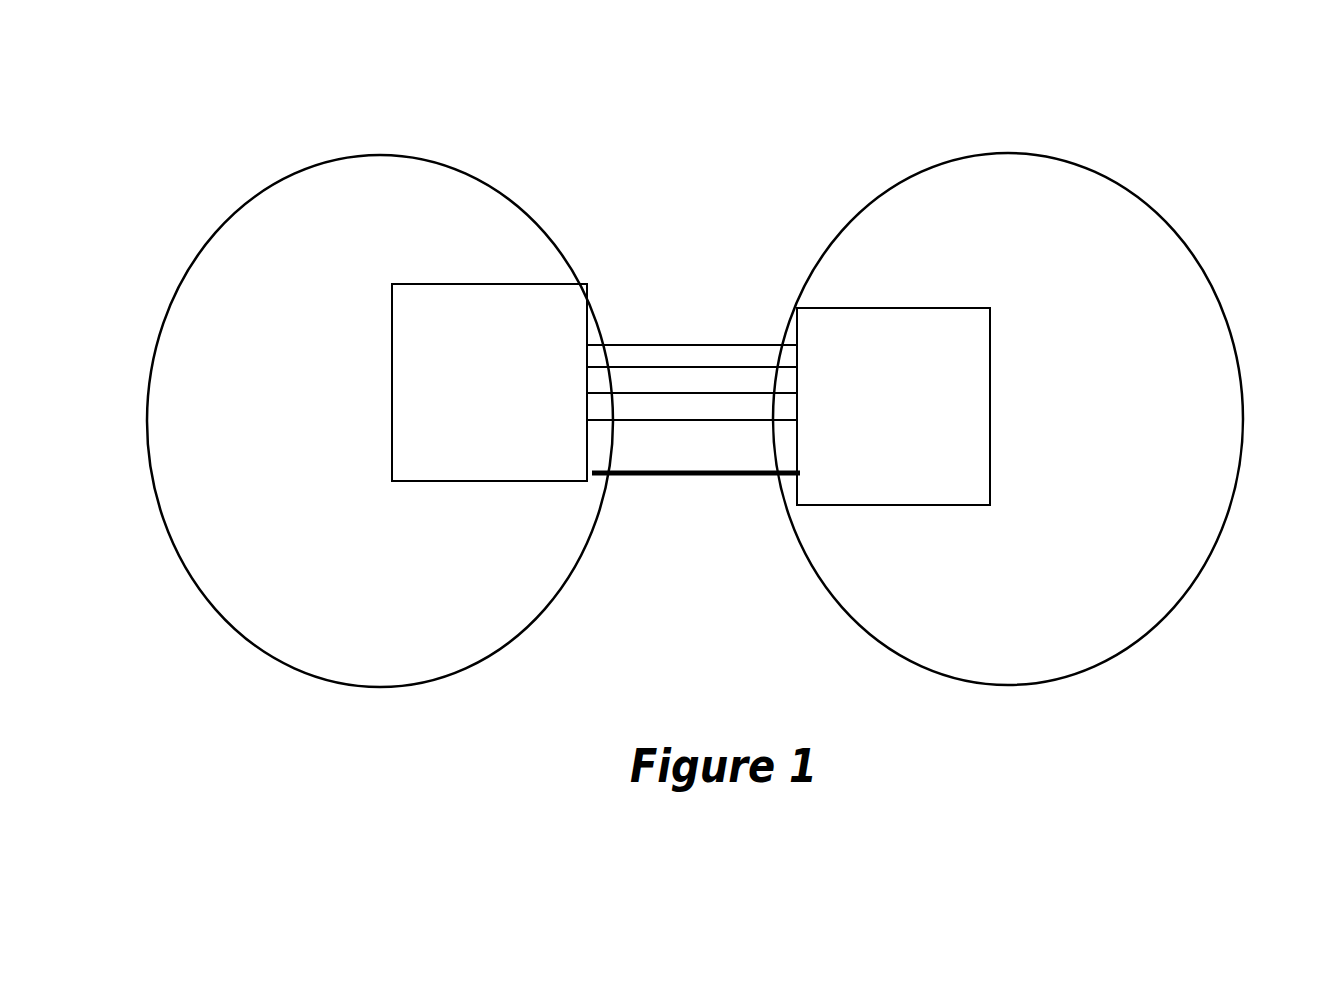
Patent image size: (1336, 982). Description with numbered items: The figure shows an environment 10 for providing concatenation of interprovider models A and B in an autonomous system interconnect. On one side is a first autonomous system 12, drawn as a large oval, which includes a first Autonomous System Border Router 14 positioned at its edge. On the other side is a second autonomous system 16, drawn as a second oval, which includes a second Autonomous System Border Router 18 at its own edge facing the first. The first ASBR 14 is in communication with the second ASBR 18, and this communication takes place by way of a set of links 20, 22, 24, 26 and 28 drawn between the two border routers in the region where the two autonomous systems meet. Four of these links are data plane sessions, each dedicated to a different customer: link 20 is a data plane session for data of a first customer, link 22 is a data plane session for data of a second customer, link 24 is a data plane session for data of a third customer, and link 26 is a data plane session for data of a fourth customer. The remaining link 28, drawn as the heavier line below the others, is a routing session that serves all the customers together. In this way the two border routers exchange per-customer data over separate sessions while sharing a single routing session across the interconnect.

The environment 10 is at (712, 358).
The first autonomous system 12 is at (380, 403).
The first Autonomous System Border Router 14 is at (518, 330).
The second autonomous system 16 is at (1008, 400).
The second Autonomous System Border Router 18 is at (1037, 343).
The link 20 is at (692, 262).
The link 22 is at (692, 286).
The link 24 is at (701, 312).
The link 26 is at (701, 499).
The link 28 is at (696, 549).